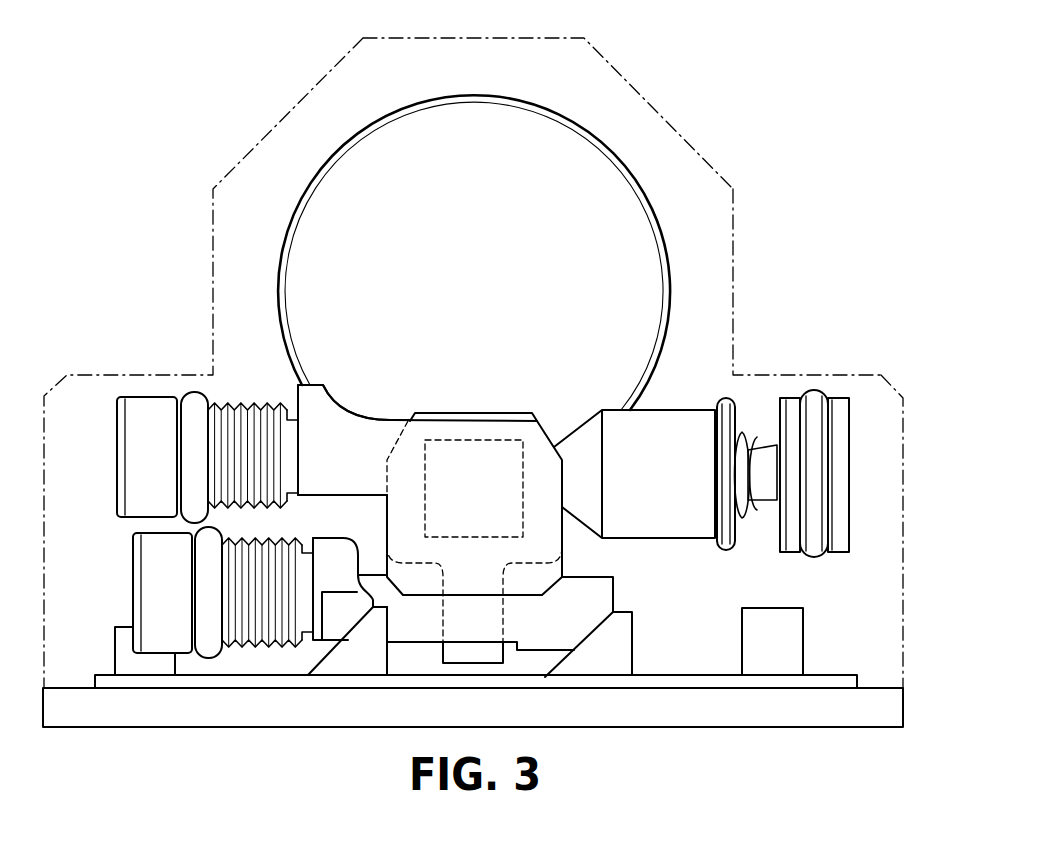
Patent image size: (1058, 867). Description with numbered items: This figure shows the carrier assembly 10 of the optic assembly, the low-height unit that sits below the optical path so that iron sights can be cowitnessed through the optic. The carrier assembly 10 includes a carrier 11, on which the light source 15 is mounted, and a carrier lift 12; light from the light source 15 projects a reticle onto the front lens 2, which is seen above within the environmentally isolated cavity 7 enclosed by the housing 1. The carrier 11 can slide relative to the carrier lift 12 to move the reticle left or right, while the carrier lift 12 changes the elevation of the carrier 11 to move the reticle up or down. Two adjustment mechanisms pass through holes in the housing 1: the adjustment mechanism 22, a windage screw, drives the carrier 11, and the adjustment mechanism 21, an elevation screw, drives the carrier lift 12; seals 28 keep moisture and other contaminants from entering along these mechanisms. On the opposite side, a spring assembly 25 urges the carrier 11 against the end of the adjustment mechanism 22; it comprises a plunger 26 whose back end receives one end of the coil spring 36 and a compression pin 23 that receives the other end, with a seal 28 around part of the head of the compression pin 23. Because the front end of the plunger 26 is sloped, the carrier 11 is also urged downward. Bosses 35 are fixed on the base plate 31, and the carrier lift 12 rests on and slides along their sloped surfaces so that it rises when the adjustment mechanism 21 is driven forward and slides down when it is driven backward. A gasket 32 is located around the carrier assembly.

The housing 1 is at (653, 107).
The front lens 2 is at (278, 291).
The environmentally isolated cavity 7 is at (465, 292).
The carrier assembly 10 is at (521, 394).
The carrier 11 is at (386, 420).
The carrier lift 12 is at (598, 577).
The light source 15 is at (473, 440).
The adjustment mechanism 21 is at (133, 593).
The adjustment mechanism 22 is at (117, 460).
The compression pin 23 is at (849, 410).
The spring assembly 25 is at (750, 366).
The plunger 26 is at (684, 410).
The seal 28 is at (194, 392).
The base plate 31 is at (903, 707).
The gasket 32 is at (822, 675).
The boss 35 is at (633, 648).
The spring 36 is at (758, 518).